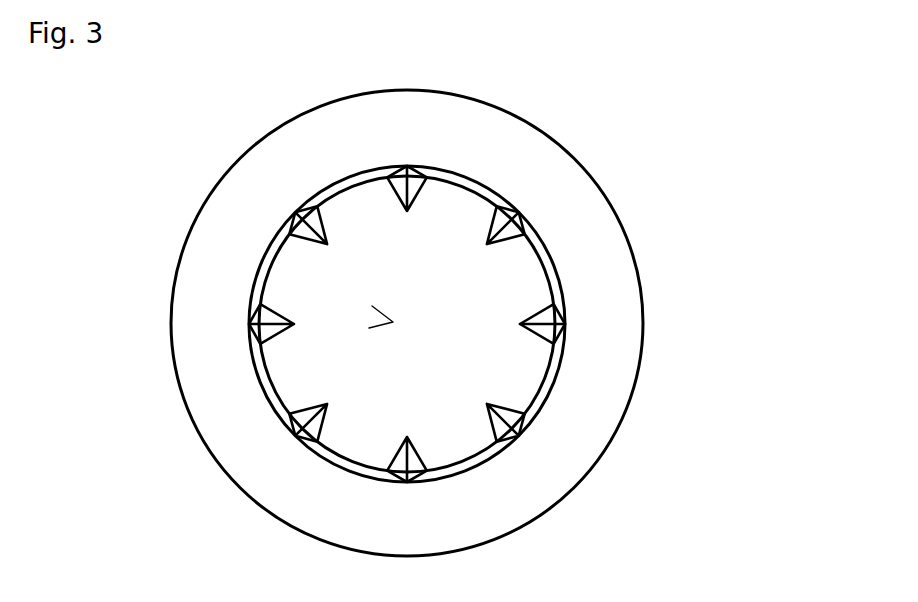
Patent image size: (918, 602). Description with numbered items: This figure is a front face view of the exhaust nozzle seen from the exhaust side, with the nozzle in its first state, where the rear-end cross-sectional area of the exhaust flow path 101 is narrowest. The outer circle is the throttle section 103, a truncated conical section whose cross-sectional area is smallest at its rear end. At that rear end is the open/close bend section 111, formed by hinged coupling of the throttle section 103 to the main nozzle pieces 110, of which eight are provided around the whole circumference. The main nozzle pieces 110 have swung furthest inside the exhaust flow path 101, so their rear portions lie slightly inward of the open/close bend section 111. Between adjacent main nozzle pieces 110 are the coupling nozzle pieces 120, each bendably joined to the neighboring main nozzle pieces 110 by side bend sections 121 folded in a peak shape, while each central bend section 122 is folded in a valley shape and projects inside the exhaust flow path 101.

The exhaust flow path 101 is at (393, 322).
The throttle section 103 is at (537, 475).
The main nozzle piece 110 is at (337, 190).
The open/close bend section 111 is at (325, 465).
The coupling nozzle piece 120 is at (410, 187).
The side bend section 121 is at (560, 312).
The central bend section 122 is at (566, 319).